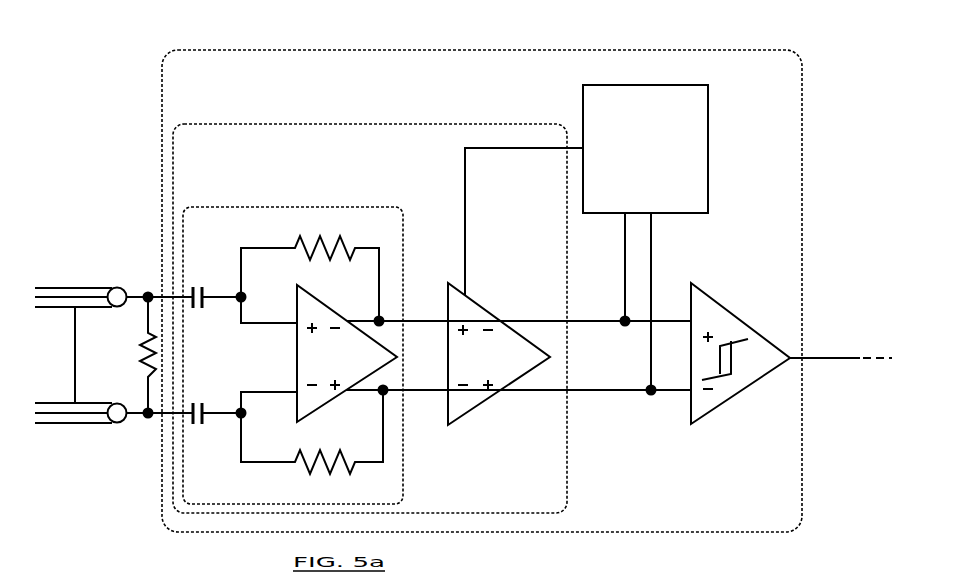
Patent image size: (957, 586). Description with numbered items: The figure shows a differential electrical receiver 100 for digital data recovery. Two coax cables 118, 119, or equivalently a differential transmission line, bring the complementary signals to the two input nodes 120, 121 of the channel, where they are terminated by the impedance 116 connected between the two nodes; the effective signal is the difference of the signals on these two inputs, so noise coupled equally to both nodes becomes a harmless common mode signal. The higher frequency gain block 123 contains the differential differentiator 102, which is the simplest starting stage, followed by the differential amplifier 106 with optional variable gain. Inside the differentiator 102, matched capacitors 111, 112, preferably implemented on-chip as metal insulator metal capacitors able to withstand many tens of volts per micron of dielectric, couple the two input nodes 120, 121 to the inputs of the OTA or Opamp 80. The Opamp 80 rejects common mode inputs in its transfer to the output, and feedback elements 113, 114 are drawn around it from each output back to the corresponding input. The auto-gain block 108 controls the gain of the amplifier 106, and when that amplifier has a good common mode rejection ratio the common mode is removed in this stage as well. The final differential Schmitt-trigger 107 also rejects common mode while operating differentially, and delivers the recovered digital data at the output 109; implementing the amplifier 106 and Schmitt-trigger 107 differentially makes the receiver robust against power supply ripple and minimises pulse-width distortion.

The sensor circuit 100 is at (377, 50).
The higher frequency gain block 123 is at (257, 123).
The differential differentiator 102 is at (258, 205).
The coax cable 118 is at (63, 285).
The coax cable 119 is at (78, 427).
The input node 120 is at (165, 296).
The input node 121 is at (166, 418).
The impedance 116 is at (138, 362).
The capacitor 111 is at (195, 283).
The capacitor 112 is at (195, 400).
The OTA or Opamp 80 is at (297, 355).
The first feedback resistor 113 is at (327, 240).
The second feedback resistor 114 is at (333, 453).
The amplifier 106 is at (477, 298).
The auto-gain option 108 is at (600, 208).
The differential Schmitt-trigger 107 is at (723, 303).
The output 109 is at (822, 353).